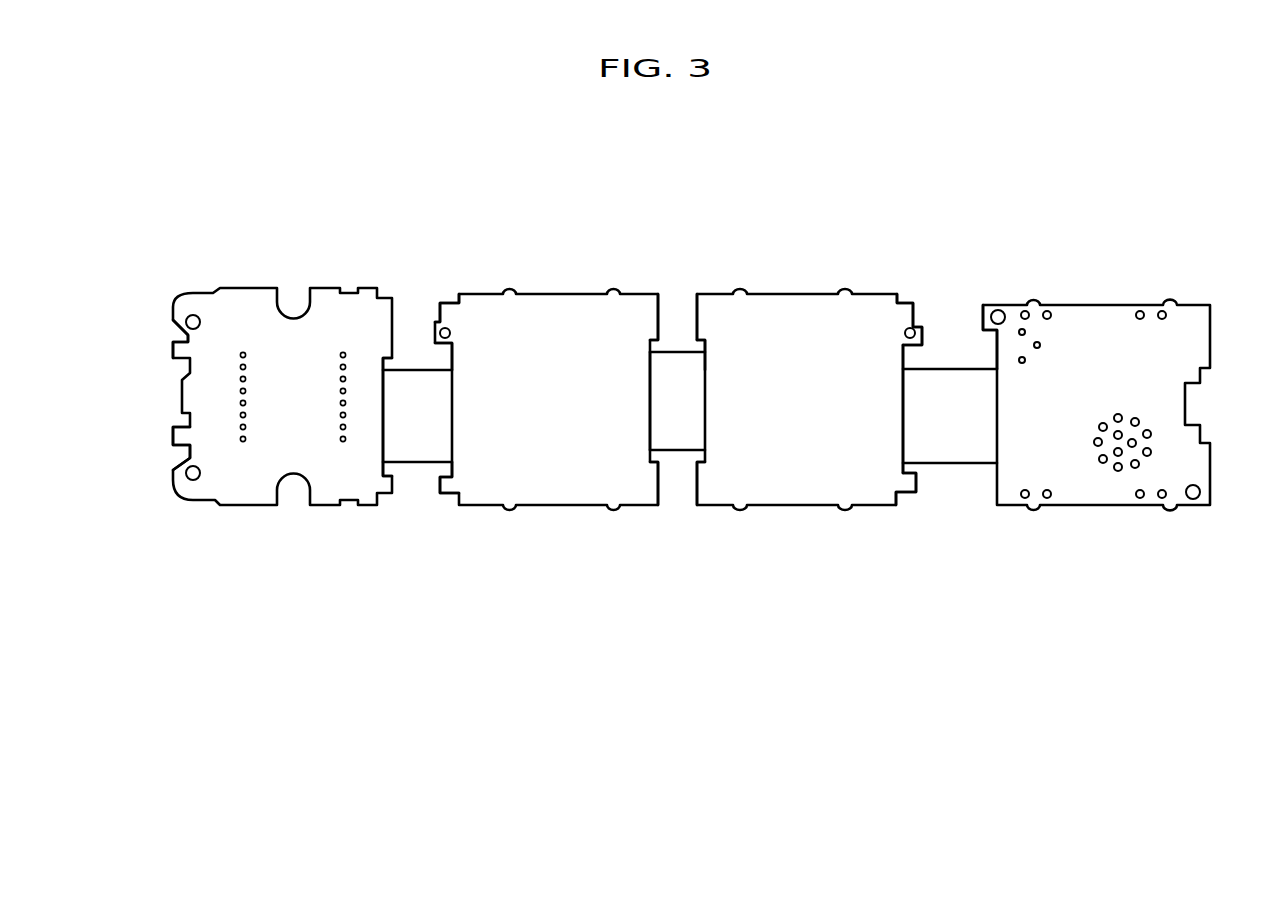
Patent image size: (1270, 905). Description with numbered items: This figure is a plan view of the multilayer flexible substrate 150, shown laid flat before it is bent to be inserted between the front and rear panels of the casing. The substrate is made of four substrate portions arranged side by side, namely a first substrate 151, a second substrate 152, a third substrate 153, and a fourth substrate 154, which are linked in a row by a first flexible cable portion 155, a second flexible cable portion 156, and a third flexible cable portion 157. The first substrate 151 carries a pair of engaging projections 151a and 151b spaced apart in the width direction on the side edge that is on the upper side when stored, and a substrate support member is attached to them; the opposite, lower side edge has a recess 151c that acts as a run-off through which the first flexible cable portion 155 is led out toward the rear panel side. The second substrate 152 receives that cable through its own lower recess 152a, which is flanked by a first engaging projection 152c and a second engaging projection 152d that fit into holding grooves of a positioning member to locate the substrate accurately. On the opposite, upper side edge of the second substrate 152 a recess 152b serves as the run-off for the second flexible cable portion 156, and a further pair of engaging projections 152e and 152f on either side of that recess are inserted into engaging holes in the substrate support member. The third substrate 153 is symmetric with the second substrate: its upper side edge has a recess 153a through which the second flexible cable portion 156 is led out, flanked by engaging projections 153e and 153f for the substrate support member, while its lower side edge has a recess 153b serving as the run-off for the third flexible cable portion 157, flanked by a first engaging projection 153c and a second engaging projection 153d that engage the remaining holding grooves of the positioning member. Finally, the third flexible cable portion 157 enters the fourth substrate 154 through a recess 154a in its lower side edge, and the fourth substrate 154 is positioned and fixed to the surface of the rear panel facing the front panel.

The multilayer flexible substrate 150 is at (768, 131).
The first substrate 151 is at (259, 484).
The engaging projection 151a is at (173, 342).
The engaging projection 151b is at (173, 440).
The recess 151c is at (384, 445).
The second substrate 152 is at (547, 483).
The recess 152a is at (452, 362).
The recess 152b is at (651, 370).
The first engaging projection 152c is at (440, 305).
The second engaging projection 152d is at (440, 488).
The engaging projection 152e is at (655, 338).
The engaging projection 152f is at (658, 490).
The third substrate 153 is at (799, 484).
The recess 153a is at (704, 350).
The recess 153b is at (905, 358).
The first engaging projection 153c is at (922, 330).
The second engaging projection 153d is at (917, 483).
The engaging projection 153e is at (697, 336).
The engaging projection 153f is at (697, 490).
The fourth substrate 154 is at (1090, 482).
The recess 154a is at (997, 358).
The first flexible cable portion 155 is at (410, 455).
The second flexible cable portion 156 is at (675, 443).
The third flexible cable portion 157 is at (948, 445).